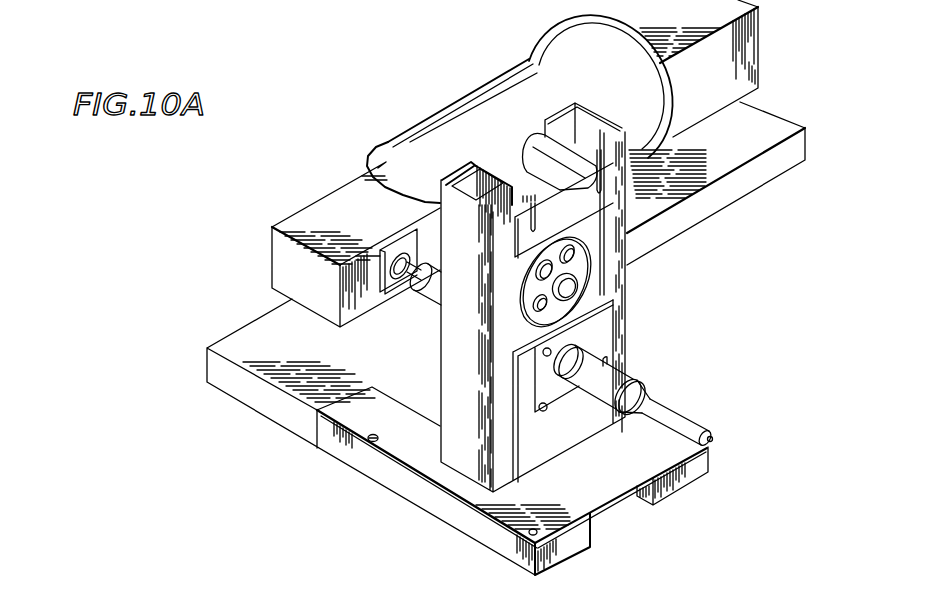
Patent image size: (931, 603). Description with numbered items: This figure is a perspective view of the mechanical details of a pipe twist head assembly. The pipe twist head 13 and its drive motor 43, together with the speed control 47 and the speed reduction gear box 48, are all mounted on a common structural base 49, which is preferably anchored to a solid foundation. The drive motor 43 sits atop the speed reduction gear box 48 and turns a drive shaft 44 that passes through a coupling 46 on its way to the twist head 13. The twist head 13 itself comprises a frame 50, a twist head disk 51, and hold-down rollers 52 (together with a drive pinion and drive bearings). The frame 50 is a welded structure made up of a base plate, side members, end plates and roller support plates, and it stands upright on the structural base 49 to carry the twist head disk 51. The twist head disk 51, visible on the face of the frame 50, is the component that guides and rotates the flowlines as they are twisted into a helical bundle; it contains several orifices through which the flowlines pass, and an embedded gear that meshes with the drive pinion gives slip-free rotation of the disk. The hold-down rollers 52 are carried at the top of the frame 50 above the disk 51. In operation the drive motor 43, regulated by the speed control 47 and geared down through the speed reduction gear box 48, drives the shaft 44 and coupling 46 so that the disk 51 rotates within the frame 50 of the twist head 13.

The pipe twist head 13 is at (610, 251).
The drive motor 43 is at (478, 88).
The drive shaft 44 is at (710, 436).
The coupling 46 is at (641, 380).
The speed control 47 is at (760, 47).
The speed reduction gear box 48 is at (321, 198).
The structural base 49 is at (348, 463).
The frame 50 is at (627, 333).
The twist head disk 51 is at (588, 287).
The hold-down rollers 52 is at (550, 150).